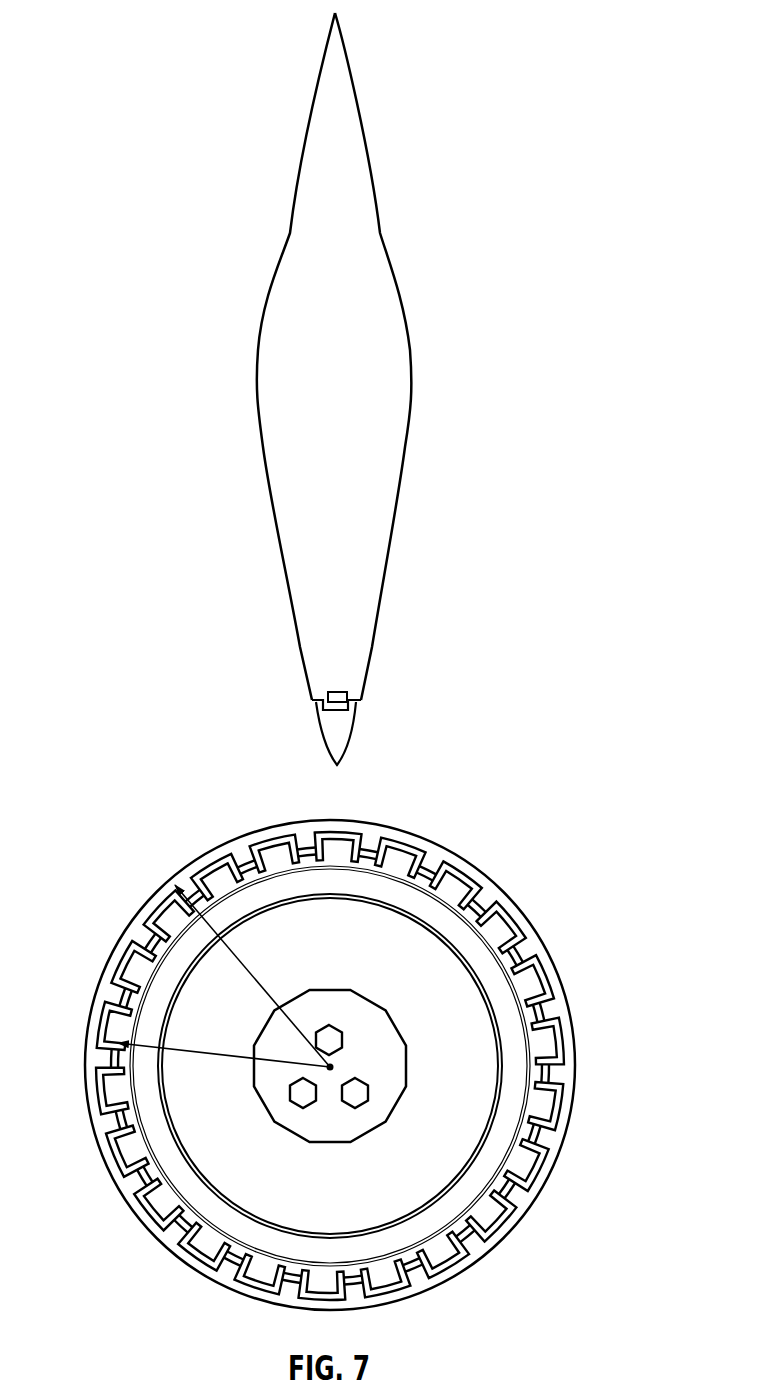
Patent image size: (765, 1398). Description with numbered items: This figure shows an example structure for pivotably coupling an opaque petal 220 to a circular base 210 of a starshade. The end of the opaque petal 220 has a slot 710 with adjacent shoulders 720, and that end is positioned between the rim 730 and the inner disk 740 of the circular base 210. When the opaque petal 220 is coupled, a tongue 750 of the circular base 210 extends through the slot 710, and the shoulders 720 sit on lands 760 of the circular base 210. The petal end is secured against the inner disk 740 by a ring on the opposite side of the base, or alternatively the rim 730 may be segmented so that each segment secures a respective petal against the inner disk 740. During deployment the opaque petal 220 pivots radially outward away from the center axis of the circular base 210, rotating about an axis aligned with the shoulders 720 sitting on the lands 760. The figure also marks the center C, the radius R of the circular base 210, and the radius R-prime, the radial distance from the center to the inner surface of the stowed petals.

The circular base 210 is at (371, 1073).
The opaque petal 220 is at (362, 228).
The slot 710 is at (347, 696).
The shoulders 720 is at (336, 753).
The rim 730 is at (537, 962).
The inner disk 740 is at (537, 1062).
The tongue 750 is at (460, 890).
The lands 760 is at (437, 861).